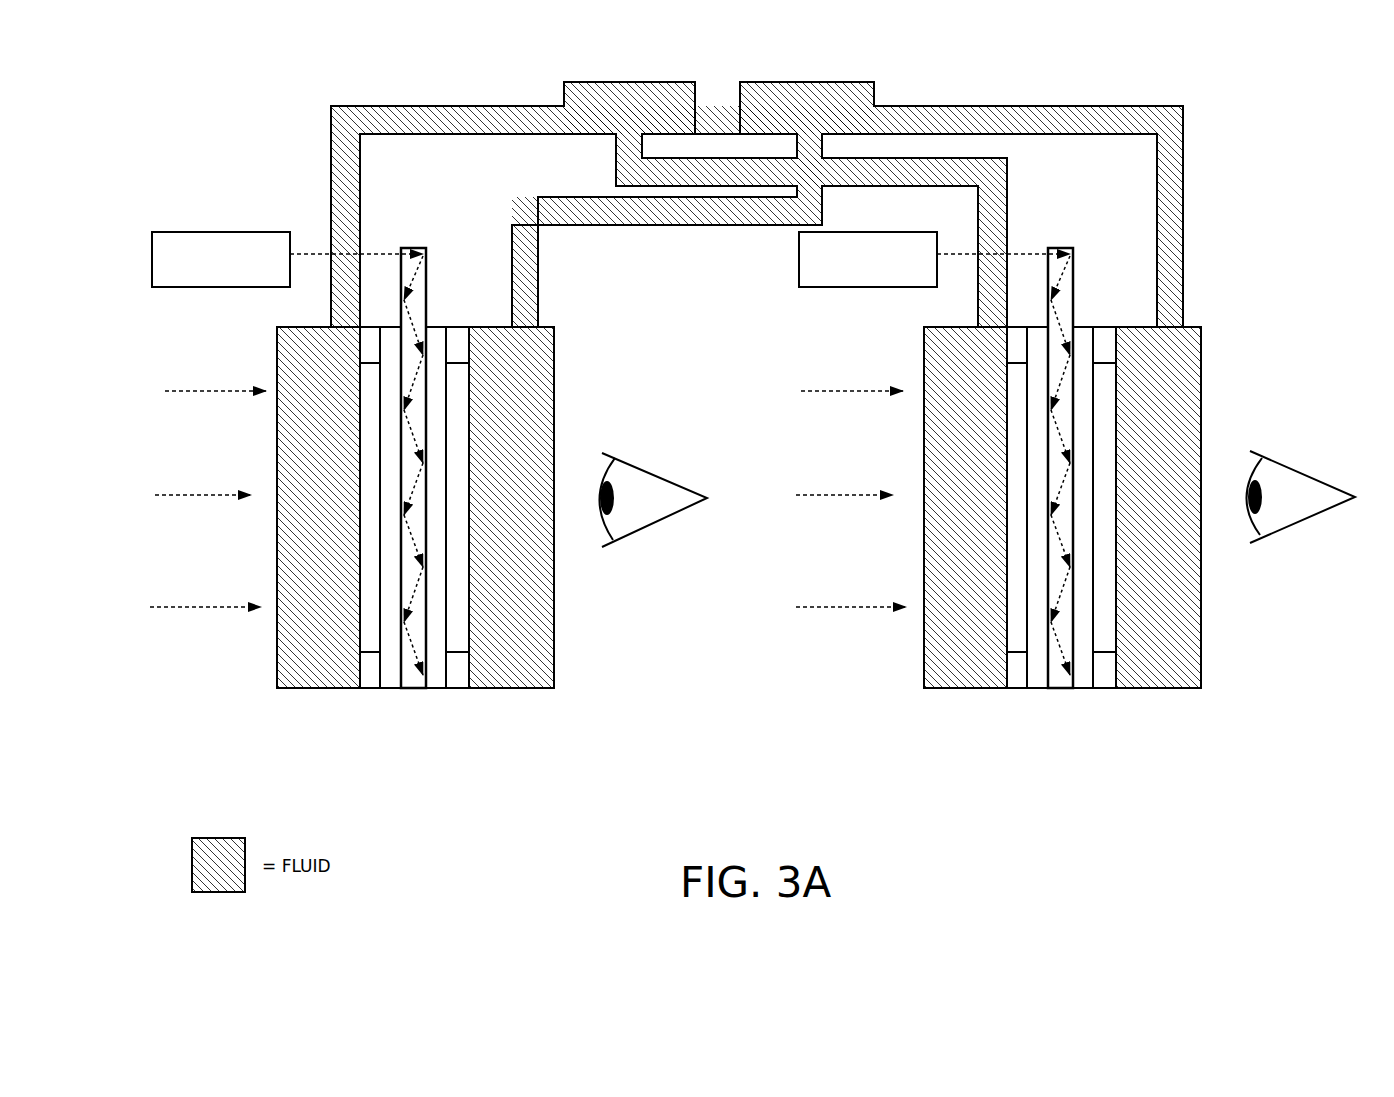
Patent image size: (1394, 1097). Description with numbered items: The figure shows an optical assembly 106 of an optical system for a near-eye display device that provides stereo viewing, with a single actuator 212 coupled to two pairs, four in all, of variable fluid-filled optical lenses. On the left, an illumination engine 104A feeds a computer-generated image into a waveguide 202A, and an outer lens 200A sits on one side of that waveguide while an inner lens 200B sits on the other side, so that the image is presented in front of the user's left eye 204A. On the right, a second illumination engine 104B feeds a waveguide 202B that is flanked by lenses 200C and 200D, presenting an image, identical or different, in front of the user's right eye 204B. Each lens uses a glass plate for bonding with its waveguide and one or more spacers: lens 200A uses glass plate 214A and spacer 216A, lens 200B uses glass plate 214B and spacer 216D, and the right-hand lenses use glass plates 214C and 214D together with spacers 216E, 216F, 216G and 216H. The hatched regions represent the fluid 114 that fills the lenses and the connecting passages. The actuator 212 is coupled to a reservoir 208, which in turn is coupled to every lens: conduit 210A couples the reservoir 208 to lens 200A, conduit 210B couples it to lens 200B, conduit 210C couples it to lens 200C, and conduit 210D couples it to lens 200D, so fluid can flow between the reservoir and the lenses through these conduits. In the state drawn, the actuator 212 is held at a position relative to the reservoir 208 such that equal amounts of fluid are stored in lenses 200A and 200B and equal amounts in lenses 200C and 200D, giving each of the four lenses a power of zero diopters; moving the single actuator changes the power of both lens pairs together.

The optical assembly 106 is at (203, 114).
The fluid 114 is at (1202, 190).
The illumination engine 104A is at (182, 278).
The illumination engine 104B is at (922, 297).
The outer lens 200A is at (307, 676).
The inner lens 200B is at (524, 684).
The variable fluid-filled optical lens 200C is at (926, 531).
The variable fluid-filled optical lens 200D is at (1182, 544).
The waveguide 202A is at (413, 684).
The waveguide 202B is at (1057, 524).
The left eye 204A is at (636, 552).
The right eye 204B is at (1308, 529).
The reservoir 208 is at (605, 93).
The conduit 210A is at (343, 118).
The conduit 210B is at (527, 240).
The conduit 210C is at (998, 172).
The conduit 210D is at (1173, 292).
The actuator 212 is at (713, 98).
The glass plate 214A is at (390, 683).
The glass plate 214B is at (437, 683).
The glass plate 214C is at (1035, 537).
The glass plate 214D is at (1099, 539).
The spacer 216A is at (365, 685).
The spacer 216D is at (463, 684).
The spacer 216E is at (986, 543).
The spacer 216F is at (1020, 338).
The spacer 216G is at (1107, 333).
The spacer 216H is at (1133, 549).